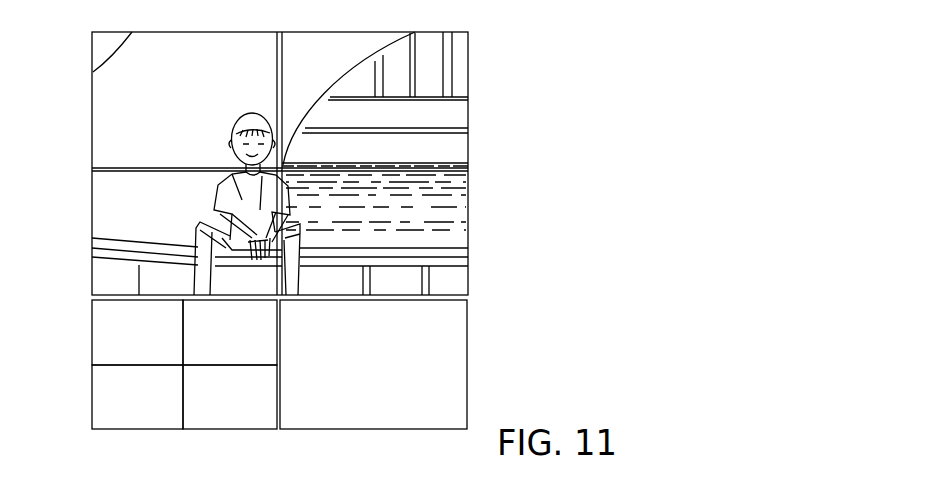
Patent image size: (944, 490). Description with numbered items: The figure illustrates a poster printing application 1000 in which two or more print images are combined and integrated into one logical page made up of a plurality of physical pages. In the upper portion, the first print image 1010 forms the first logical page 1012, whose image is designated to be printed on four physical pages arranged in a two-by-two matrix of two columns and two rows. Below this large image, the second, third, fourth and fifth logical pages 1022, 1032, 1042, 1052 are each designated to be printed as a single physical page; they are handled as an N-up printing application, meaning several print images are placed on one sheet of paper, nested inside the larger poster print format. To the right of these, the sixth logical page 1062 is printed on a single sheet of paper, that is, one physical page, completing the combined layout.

The poster printing application 1000 is at (480, 30).
The first print image 1010 is at (484, 124).
The first logical page 1012 is at (520, 186).
The second logical page 1022 is at (108, 344).
The third logical page 1032 is at (259, 341).
The fourth logical page 1042 is at (110, 398).
The fifth logical page 1052 is at (204, 414).
The sixth logical page 1062 is at (479, 371).